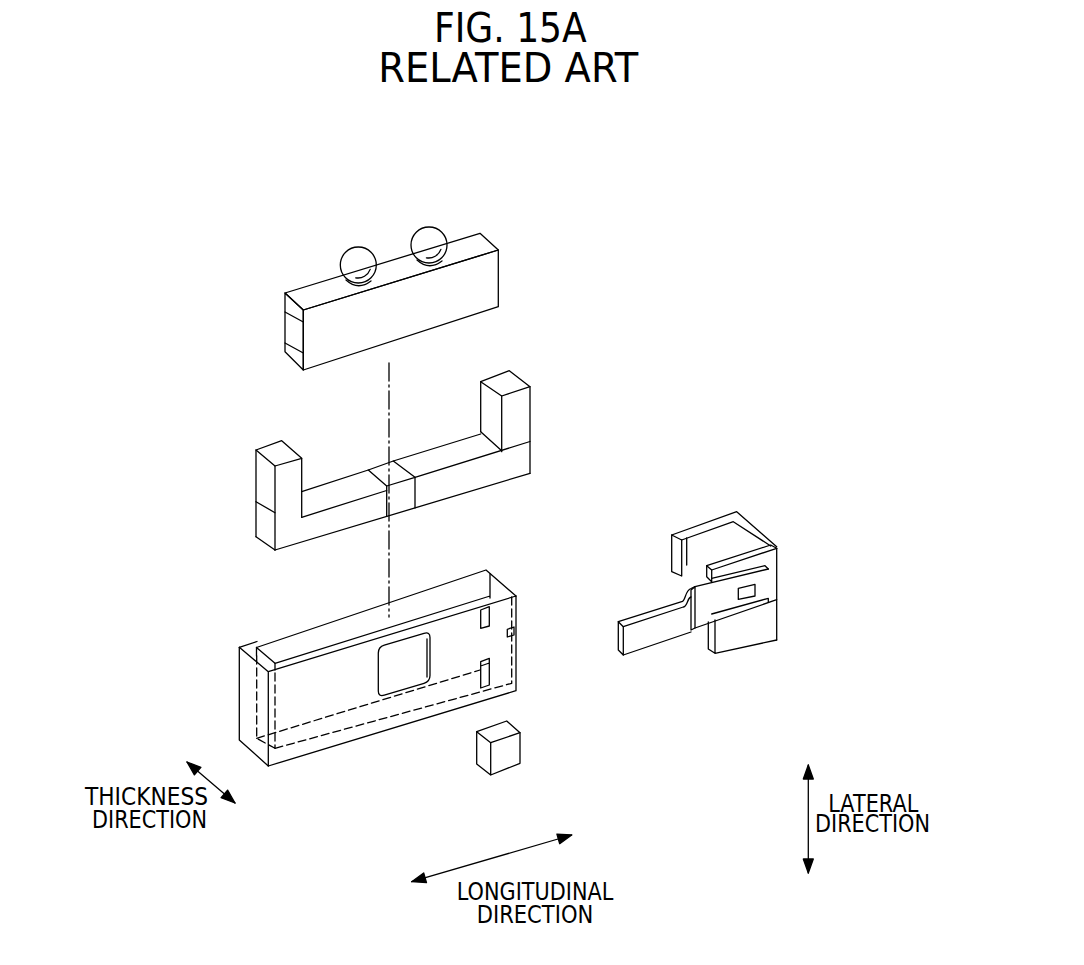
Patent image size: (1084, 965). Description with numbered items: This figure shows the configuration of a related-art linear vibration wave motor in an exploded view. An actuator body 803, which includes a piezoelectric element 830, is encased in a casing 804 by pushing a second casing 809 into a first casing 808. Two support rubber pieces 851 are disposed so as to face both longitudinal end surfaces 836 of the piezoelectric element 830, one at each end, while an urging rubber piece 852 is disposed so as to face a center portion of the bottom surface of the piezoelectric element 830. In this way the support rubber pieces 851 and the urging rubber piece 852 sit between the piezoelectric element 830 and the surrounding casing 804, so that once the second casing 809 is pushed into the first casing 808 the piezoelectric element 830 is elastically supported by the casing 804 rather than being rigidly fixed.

The actuator body 803 is at (472, 228).
The piezoelectric element 830 is at (312, 293).
The longitudinal end surfaces 836 is at (292, 330).
The support rubber pieces 851 is at (275, 448).
The urging rubber piece 852 is at (395, 467).
The first casing 808 is at (421, 731).
The second casing 809 is at (761, 642).
The casing 804 is at (821, 705).